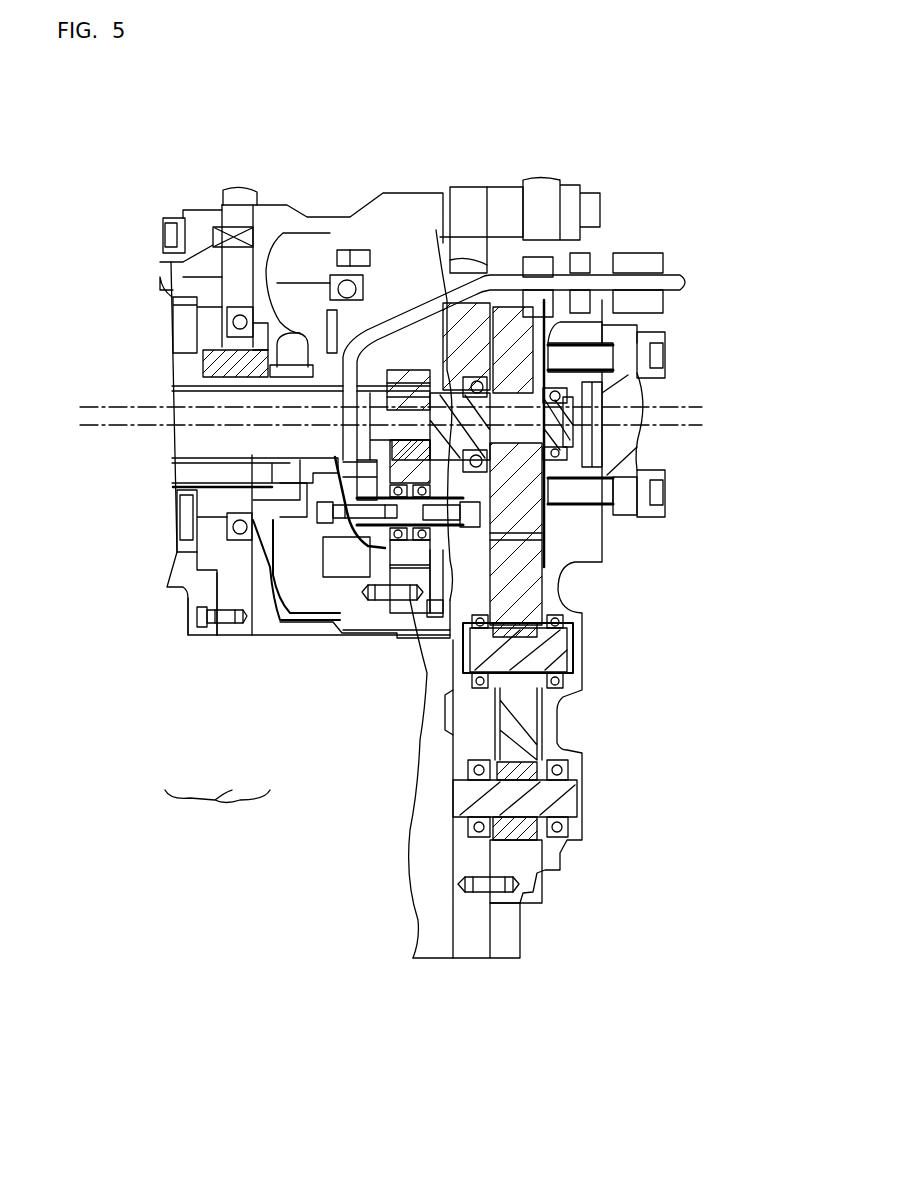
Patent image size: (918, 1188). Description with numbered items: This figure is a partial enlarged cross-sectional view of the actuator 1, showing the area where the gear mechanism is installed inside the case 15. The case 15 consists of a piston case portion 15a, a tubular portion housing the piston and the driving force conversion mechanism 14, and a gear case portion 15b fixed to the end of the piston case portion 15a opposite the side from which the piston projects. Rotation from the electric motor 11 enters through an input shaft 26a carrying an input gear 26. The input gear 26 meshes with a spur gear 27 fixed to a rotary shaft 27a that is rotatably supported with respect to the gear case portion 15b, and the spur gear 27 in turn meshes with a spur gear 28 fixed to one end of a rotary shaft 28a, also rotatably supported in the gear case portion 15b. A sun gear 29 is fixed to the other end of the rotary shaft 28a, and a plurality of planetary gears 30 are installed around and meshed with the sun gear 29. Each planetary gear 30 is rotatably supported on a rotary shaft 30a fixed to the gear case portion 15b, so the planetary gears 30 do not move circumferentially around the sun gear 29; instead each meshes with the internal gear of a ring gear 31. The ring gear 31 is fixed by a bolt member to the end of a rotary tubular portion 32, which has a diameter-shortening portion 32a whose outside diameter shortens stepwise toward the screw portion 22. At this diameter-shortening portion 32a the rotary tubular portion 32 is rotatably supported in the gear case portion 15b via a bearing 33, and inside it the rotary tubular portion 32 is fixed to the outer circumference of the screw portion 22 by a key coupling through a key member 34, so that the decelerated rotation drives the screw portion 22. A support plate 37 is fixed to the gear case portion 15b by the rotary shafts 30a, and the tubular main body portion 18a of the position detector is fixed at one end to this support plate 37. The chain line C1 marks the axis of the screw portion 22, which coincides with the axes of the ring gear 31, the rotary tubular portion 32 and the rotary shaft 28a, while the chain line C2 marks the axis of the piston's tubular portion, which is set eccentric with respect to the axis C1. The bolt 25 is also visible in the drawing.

The actuator 1 is at (601, 128).
The electric motor 11 is at (430, 948).
The driving force conversion mechanism 14 is at (215, 475).
The case 15 is at (217, 807).
The piston case portion 15a is at (207, 632).
The gear case portion 15b is at (272, 632).
The main body portion 18a is at (177, 443).
The screw portion 22 is at (222, 617).
The bolt 25 is at (182, 320).
The input gear 26 is at (513, 830).
The input shaft 26a is at (567, 805).
The spur gear 27 is at (532, 718).
The rotary shaft 27a is at (562, 650).
The spur gear 28 is at (533, 355).
The rotary shaft 28a is at (557, 433).
The sun gear 29 is at (577, 456).
The planetary gears 30 is at (407, 373).
The rotary shaft 30a is at (605, 521).
The ring gear 31 is at (407, 612).
The rotary tubular portion 32 is at (332, 210).
The diameter-shortening portion 32a is at (220, 343).
The bearing 33 is at (240, 532).
The key member 34 is at (248, 325).
The support plate 37 is at (337, 530).
The axis C1 is at (113, 440).
The axis C2 is at (115, 407).